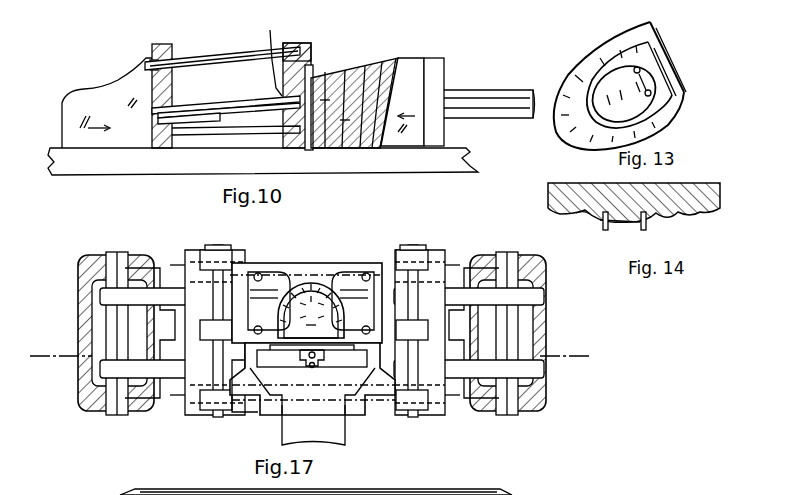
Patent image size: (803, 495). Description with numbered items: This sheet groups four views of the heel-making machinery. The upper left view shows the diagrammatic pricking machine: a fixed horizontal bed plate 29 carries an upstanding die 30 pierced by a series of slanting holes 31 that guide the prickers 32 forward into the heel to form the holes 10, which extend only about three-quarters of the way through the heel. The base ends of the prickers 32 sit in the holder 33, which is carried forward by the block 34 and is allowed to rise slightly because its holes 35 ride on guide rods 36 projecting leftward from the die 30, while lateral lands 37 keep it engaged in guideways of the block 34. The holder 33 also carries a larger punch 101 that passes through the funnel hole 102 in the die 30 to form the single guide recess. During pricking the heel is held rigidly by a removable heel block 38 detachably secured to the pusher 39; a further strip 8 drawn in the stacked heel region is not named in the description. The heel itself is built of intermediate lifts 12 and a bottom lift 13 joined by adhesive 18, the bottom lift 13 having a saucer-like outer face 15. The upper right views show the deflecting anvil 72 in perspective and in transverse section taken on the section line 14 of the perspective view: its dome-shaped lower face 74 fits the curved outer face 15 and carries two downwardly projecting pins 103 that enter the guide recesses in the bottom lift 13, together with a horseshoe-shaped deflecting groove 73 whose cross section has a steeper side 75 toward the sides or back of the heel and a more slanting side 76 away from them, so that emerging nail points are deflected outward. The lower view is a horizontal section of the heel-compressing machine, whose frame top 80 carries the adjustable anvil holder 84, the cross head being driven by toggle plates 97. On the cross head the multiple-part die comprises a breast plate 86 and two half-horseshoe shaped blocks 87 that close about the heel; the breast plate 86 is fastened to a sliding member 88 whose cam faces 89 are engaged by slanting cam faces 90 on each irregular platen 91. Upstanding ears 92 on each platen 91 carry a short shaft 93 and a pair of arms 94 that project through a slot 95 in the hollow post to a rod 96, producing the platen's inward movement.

In FIG. 10, the lower strip 8 is at (316, 150).
In FIG. 10, the holes 10 is at (356, 70).
In FIG. 10, the intermediate lifts 12 is at (350, 148).
In FIG. 10, the bottom lift 13 is at (392, 58).
In FIG. 13, the socket section 14 is at (626, 42).
In FIG. 17, the socket section 14 is at (312, 298).
In FIG. 17, the outer face 15 is at (320, 298).
In FIG. 17, the adhesive 18 is at (306, 356).
In FIG. 10, the bed plate 29 is at (303, 165).
In FIG. 10, the die 30 is at (302, 42).
In FIG. 10, the holes 31 is at (308, 70).
In FIG. 10, the prickers 32 is at (218, 98).
In FIG. 10, the holder 33 is at (172, 92).
In FIG. 10, the block 34 is at (107, 103).
In FIG. 10, the holes 35 is at (152, 56).
In FIG. 10, the guide rods 36 is at (235, 50).
In FIG. 10, the lateral lands 37 is at (165, 46).
In FIG. 10, the heel block 38 is at (408, 62).
In FIG. 10, the pusher 39 is at (438, 80).
In FIG. 13, the anvil 72 is at (672, 55).
In FIG. 13, the deflecting groove 73 is at (684, 92).
In FIG. 14, the deflecting groove 73 is at (578, 212).
In FIG. 13, the lower face 74 is at (676, 78).
In FIG. 14, the steeper side 75 is at (590, 220).
In FIG. 13, the slanting side 76 is at (588, 78).
In FIG. 14, the slanting side 76 is at (600, 224).
In FIG. 17, the top 80 is at (466, 492).
In FIG. 17, the anvil holder 84 is at (366, 492).
In FIG. 17, the breast plate 86 is at (300, 368).
In FIG. 17, the half-horseshoe shaped blocks 87 is at (280, 282).
In FIG. 17, the member 88 is at (330, 380).
In FIG. 17, the cam faces 89 is at (268, 385).
In FIG. 17, the cam faces 90 is at (262, 392).
In FIG. 17, the platen 91 is at (192, 416).
In FIG. 17, the ears 92 is at (205, 254).
In FIG. 17, the short shaft 93 is at (414, 246).
In FIG. 17, the arms 94 is at (150, 372).
In FIG. 17, the slot 95 is at (150, 332).
In FIG. 17, the rod 96 is at (112, 262).
In FIG. 17, the plates 97 is at (220, 248).
In FIG. 10, the punch 101 is at (206, 122).
In FIG. 10, the funnel hole 102 is at (279, 51).
In FIG. 13, the pins 103 is at (652, 96).
In FIG. 14, the pins 103 is at (648, 230).